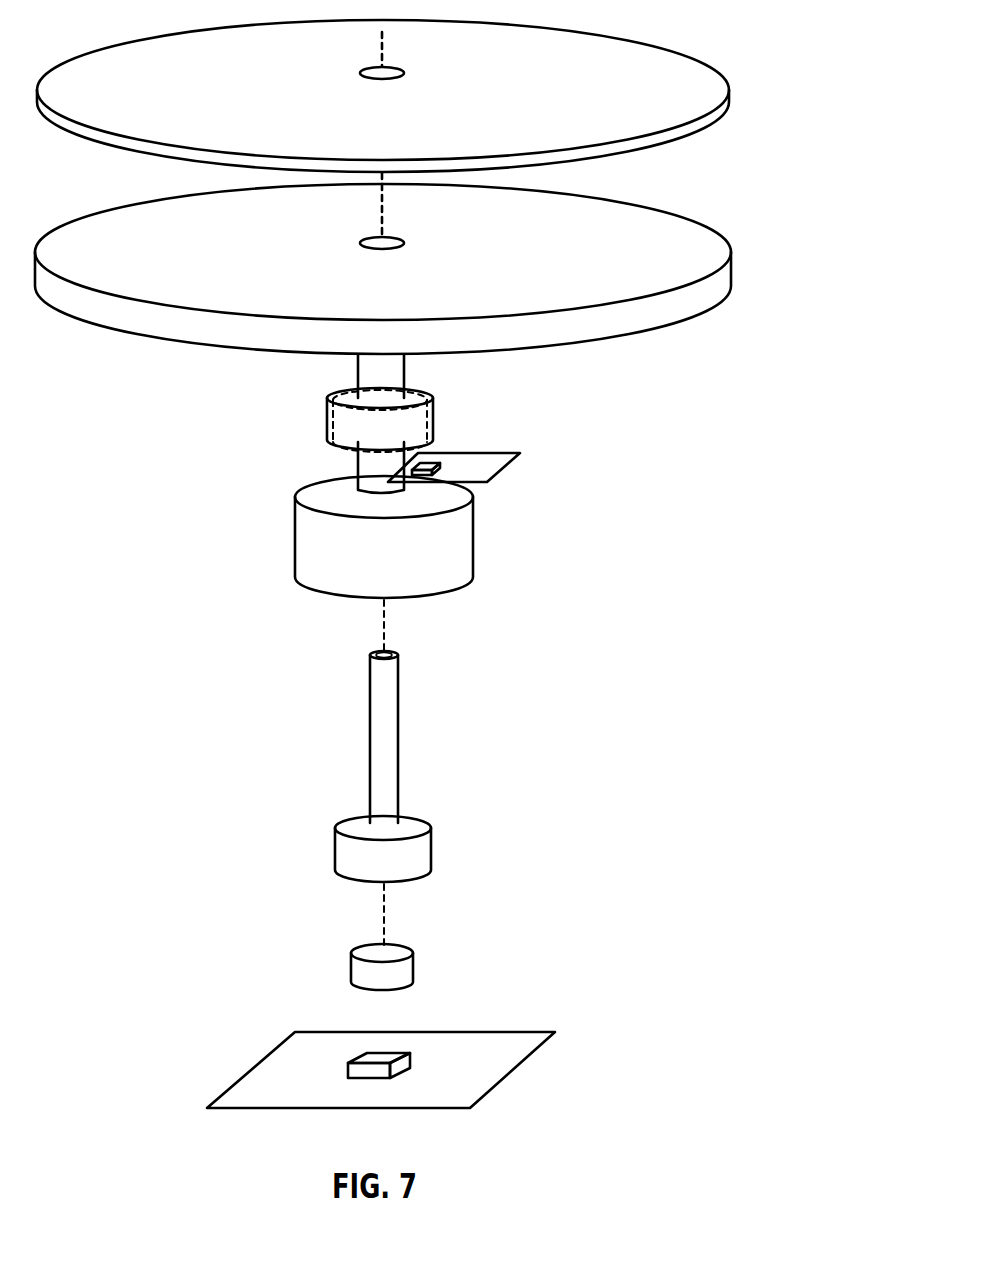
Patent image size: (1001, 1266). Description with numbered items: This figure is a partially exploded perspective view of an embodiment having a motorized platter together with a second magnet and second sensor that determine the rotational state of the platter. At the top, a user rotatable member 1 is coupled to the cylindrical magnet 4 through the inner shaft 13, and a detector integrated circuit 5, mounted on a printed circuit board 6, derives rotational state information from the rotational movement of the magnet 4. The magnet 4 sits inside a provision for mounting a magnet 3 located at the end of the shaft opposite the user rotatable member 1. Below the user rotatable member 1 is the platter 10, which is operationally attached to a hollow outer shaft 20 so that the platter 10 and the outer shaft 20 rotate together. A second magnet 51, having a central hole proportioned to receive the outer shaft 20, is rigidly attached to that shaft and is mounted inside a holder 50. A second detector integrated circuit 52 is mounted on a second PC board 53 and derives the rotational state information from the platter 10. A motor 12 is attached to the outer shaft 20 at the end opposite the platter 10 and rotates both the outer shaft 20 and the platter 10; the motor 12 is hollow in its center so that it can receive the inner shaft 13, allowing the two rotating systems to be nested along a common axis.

The user rotatable member 1 is at (690, 80).
The platter 10 is at (677, 240).
The hollow outer shaft 20 is at (393, 370).
The holder 50 is at (440, 417).
The second magnet 51 is at (347, 427).
The second detector integrated circuit 52 is at (433, 462).
The second PC board 53 is at (472, 488).
The motor 12 is at (453, 543).
The inner shaft 13 is at (393, 747).
The provision for mounting a magnet 3 is at (403, 860).
The cylindrical magnet 4 is at (403, 968).
The printed circuit board 6 is at (548, 1042).
The detector integrated circuit 5 is at (412, 1060).